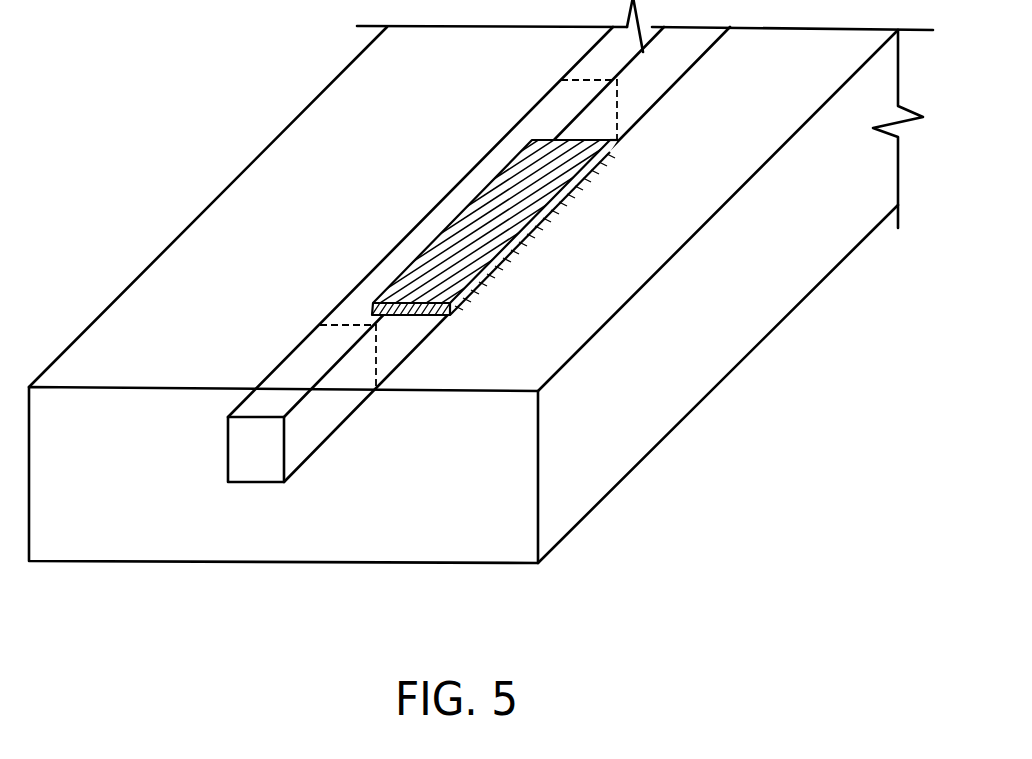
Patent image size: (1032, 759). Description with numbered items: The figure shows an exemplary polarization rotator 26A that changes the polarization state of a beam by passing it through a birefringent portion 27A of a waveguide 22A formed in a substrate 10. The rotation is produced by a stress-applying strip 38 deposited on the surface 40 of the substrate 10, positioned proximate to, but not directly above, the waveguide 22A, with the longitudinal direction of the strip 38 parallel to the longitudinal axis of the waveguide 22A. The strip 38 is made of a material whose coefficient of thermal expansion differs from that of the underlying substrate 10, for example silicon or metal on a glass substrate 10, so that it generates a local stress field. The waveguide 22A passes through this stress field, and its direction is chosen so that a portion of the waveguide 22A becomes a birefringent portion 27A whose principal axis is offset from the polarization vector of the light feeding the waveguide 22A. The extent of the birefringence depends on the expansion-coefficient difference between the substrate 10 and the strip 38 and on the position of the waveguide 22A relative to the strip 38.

The substrate 10 is at (655, 386).
The waveguide 22A is at (662, 80).
The polarization rotator 26A is at (386, 196).
The birefringent portion 27A is at (340, 308).
The stress-applying strip 38 is at (545, 210).
The surface 40 is at (690, 210).